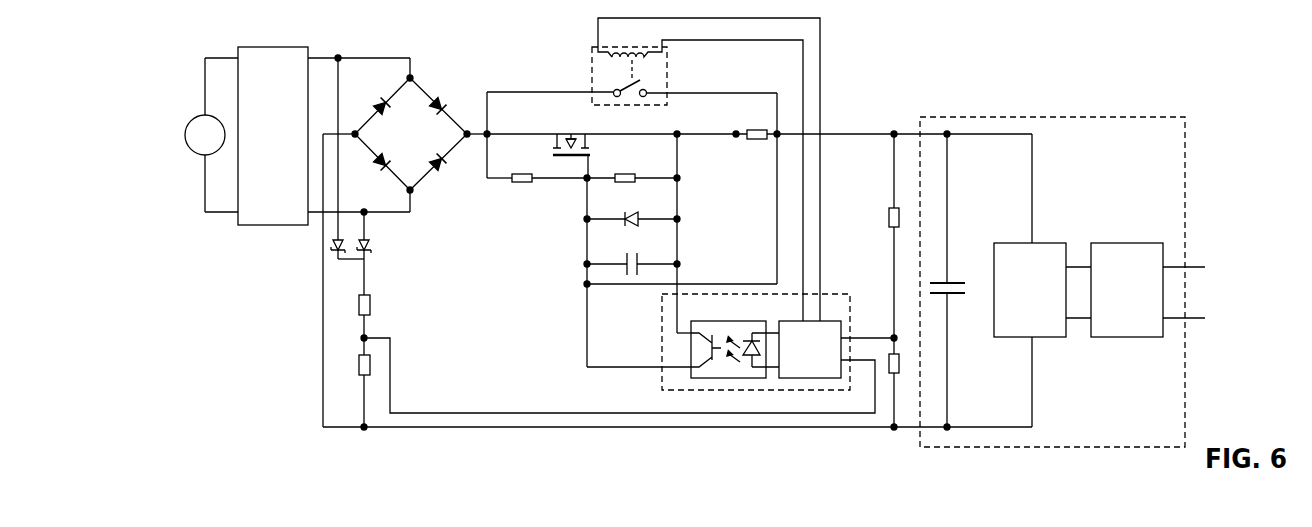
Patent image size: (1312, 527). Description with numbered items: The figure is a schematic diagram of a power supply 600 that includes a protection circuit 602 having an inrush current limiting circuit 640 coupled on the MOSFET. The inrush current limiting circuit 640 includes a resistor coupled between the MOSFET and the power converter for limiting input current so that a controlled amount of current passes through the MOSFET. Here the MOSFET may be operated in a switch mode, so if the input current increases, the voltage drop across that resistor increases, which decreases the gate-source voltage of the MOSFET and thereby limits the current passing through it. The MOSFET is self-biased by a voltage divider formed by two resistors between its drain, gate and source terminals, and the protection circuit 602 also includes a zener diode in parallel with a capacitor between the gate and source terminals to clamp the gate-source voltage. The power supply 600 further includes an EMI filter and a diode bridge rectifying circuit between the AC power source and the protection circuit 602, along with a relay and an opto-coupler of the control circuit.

The power supply 600 is at (206, 38).
The protection circuit 602 is at (549, 235).
The inrush current limiting circuit 640 is at (750, 160).